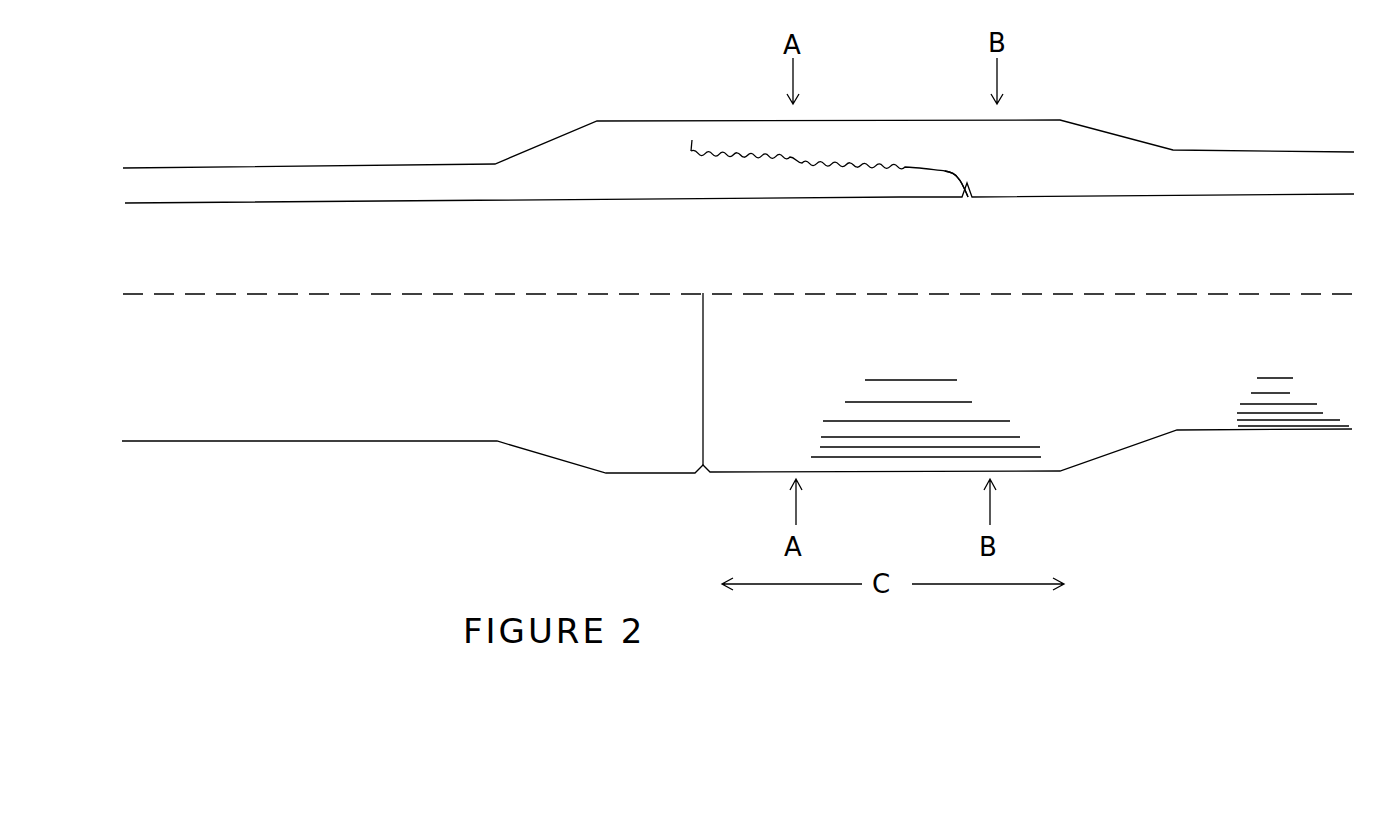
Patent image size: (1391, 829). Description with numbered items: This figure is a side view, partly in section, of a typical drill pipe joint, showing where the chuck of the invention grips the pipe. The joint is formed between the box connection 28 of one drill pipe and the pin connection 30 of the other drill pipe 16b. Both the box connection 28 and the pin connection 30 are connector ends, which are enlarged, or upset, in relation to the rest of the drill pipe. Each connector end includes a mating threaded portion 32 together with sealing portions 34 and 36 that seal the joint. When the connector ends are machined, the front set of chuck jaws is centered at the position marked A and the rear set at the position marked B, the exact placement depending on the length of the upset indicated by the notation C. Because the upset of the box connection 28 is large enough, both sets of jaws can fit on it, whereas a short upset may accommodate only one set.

The drill pipe 16b is at (187, 168).
The box connection 28 is at (882, 463).
The pin connection 30 is at (545, 433).
The threaded portion 32 is at (900, 163).
The sealing portion 34 is at (965, 176).
The sealing portion 36 is at (691, 151).